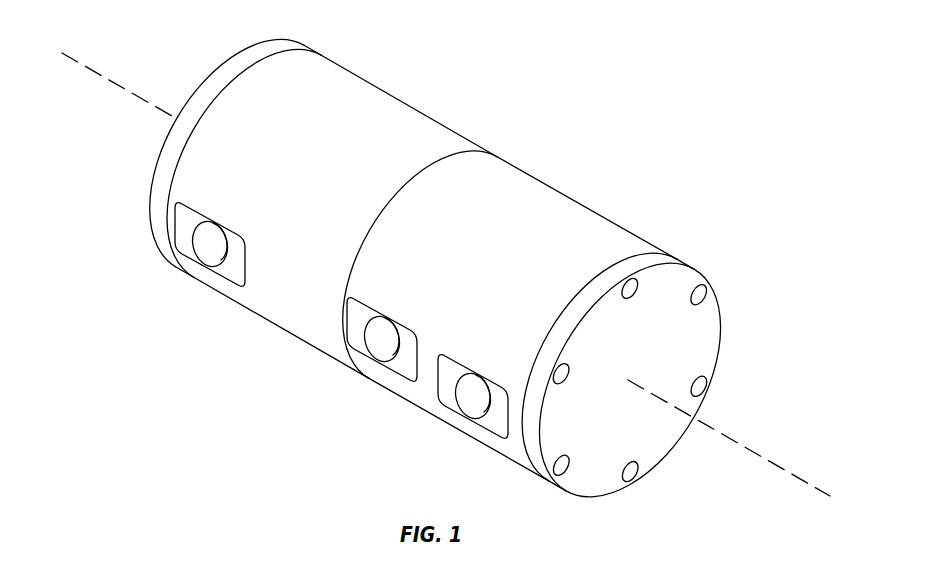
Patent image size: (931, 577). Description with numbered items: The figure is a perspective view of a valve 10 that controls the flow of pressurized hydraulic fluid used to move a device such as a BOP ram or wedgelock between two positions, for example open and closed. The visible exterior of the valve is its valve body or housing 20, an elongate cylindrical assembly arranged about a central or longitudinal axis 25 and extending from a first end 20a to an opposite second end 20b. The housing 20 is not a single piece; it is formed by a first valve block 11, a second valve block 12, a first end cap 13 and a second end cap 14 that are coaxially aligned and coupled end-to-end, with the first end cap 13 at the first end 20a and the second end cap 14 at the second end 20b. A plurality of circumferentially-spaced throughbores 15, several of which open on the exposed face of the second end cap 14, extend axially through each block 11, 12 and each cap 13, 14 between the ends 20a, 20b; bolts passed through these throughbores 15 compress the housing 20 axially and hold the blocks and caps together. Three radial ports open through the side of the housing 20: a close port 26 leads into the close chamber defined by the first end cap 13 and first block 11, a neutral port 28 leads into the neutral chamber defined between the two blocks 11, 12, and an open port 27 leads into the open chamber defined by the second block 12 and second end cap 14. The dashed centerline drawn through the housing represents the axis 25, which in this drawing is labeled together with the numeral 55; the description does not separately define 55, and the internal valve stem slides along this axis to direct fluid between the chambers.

The valve 10 is at (446, 275).
The first valve block 11 is at (365, 92).
The second valve block 12 is at (563, 206).
The first end cap 13 is at (244, 57).
The second end cap 14 is at (711, 348).
The throughbores 15 is at (708, 291).
The valve body or housing 20 is at (523, 319).
The first end 20a is at (234, 150).
The second end 20b is at (716, 330).
The central or longitudinal axis 25 is at (446, 274).
The close port 26 is at (211, 262).
The open port 27 is at (477, 415).
The neutral port 28 is at (377, 356).
The central axis 55 is at (744, 444).